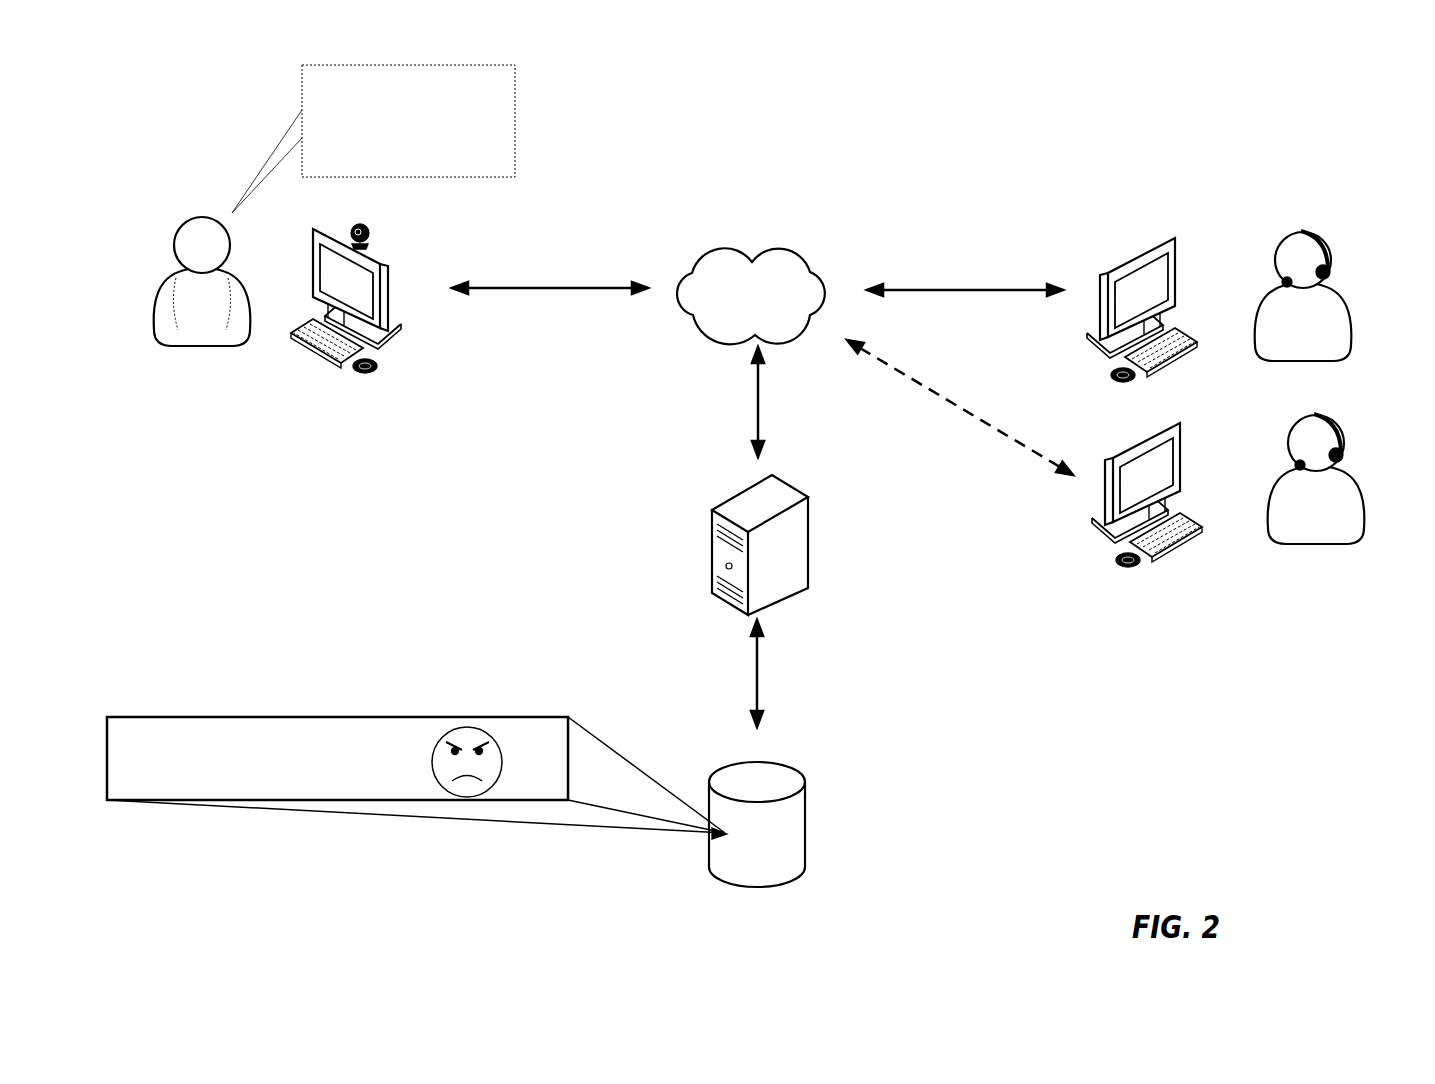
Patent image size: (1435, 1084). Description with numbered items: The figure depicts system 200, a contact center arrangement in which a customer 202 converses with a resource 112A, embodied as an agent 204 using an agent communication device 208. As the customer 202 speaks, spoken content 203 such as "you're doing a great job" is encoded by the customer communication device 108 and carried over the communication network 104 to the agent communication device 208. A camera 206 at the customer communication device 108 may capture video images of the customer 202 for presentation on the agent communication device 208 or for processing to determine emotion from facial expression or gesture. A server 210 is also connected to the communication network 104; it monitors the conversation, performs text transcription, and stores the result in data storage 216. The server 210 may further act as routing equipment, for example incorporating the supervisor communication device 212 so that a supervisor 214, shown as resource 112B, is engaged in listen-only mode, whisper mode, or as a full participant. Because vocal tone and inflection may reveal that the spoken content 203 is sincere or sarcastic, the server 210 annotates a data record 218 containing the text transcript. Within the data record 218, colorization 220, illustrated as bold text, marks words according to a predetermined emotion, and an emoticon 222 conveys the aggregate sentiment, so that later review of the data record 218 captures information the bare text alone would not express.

The system 200 is at (1246, 104).
The resource 112A is at (1287, 178).
The resource 112B is at (1261, 600).
The customer 202 is at (205, 318).
The spoken content 203 is at (515, 120).
The camera 206 is at (370, 232).
The customer communication device 108 is at (383, 340).
The communication network 104 is at (778, 250).
The agent communication device 208 is at (1178, 270).
The agent 204 is at (1347, 310).
The supervisor communication device 212 is at (1187, 453).
The supervisor 214 is at (1350, 487).
The server 210 is at (810, 528).
The data storage 216 is at (805, 823).
The data record 218 is at (130, 717).
The colorization 220 is at (320, 731).
The emoticon 222 is at (526, 732).